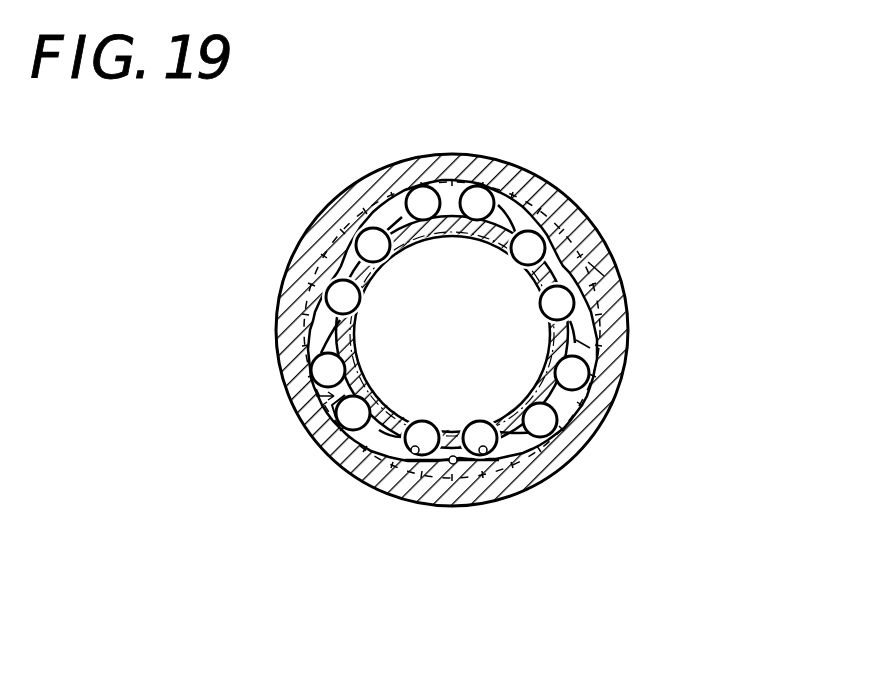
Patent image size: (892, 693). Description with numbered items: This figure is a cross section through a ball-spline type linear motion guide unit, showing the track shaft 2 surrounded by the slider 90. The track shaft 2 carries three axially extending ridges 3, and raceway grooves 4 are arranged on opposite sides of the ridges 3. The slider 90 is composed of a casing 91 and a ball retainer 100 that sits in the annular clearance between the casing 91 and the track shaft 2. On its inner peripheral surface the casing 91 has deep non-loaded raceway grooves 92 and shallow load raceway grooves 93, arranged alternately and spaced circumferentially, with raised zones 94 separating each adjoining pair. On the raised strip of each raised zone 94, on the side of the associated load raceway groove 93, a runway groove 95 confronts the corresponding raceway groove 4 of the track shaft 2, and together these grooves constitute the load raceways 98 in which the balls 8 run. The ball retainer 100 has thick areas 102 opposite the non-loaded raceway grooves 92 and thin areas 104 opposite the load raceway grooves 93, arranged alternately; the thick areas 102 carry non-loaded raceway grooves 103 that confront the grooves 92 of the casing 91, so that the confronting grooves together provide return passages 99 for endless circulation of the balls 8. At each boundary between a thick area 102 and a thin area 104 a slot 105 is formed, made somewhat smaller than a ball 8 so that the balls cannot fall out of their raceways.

The track shaft 2 is at (441, 277).
The ridges 3 is at (547, 271).
The raceway grooves 4 is at (548, 307).
The balls 8 is at (573, 373).
The slider 90 is at (566, 185).
The casing 91 is at (597, 268).
The non-loaded raceway grooves 92 is at (562, 418).
The load raceway grooves 93 is at (453, 463).
The raised zones 94 is at (580, 322).
The runway groove 95 is at (483, 453).
The load raceways 98 is at (432, 462).
The return passages 99 is at (316, 398).
The ball retainer 100 is at (583, 349).
The thick areas 102 is at (340, 418).
The non-loaded raceway grooves 103 is at (343, 430).
The thin areas 104 is at (347, 253).
The slot 105 is at (327, 297).